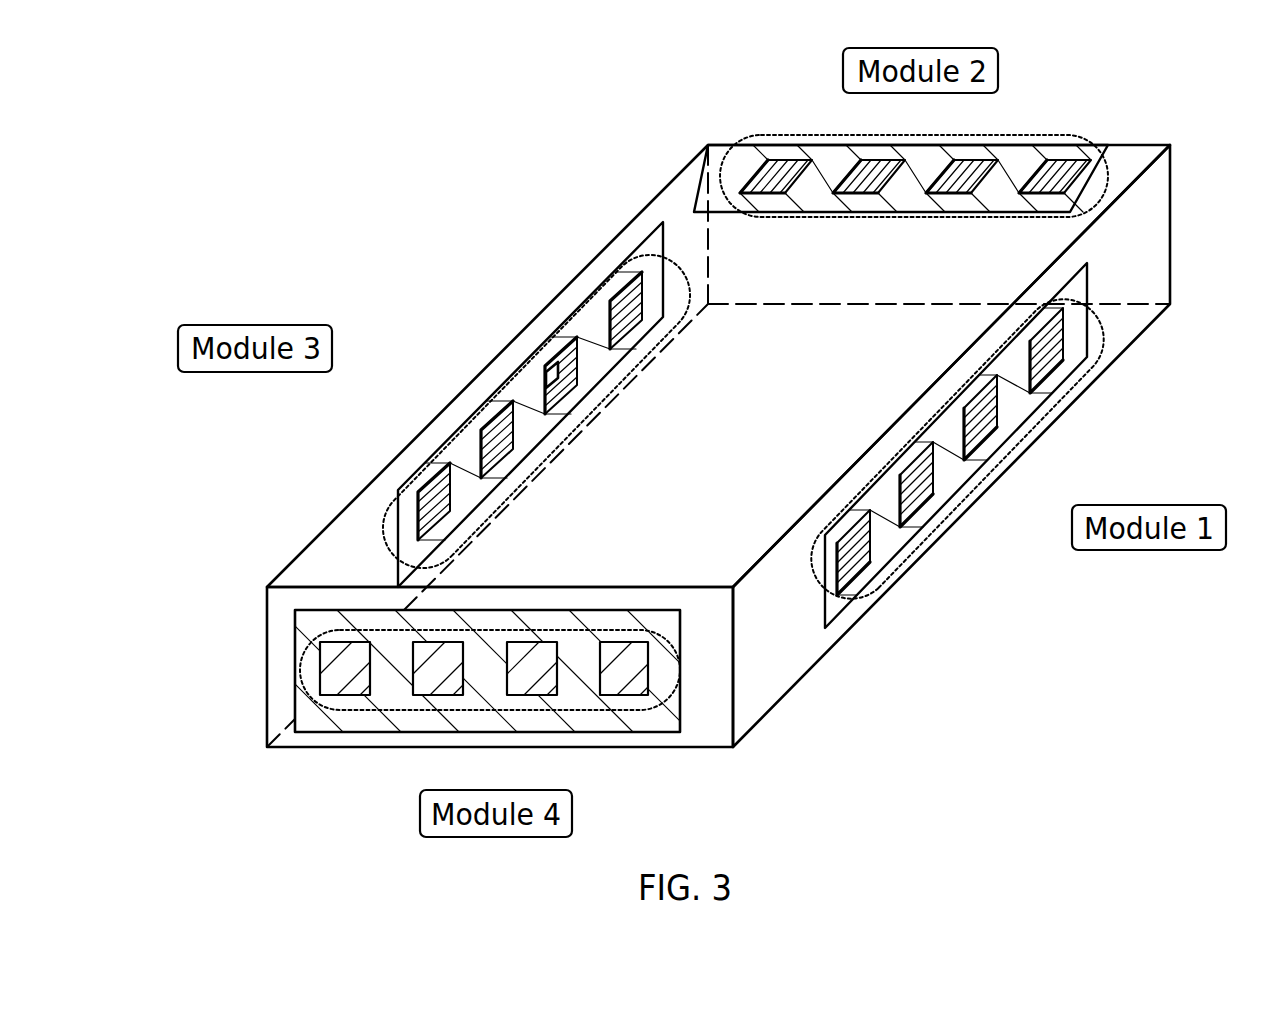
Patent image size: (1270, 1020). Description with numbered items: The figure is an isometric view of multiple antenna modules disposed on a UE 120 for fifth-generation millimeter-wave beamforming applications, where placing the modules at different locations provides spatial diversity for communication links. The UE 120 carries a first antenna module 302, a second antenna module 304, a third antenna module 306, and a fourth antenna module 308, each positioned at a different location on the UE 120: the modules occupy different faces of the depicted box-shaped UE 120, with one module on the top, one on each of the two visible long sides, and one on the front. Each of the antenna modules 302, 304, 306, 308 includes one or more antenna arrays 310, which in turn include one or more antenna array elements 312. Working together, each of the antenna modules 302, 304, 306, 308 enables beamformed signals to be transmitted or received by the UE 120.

The UE 120 is at (249, 75).
The first antenna module 302 is at (883, 575).
The second antenna module 304 is at (772, 136).
The third antenna module 306 is at (600, 282).
The fourth antenna module 308 is at (318, 642).
The antenna array 310 is at (767, 187).
The antenna array element 312 is at (557, 373).